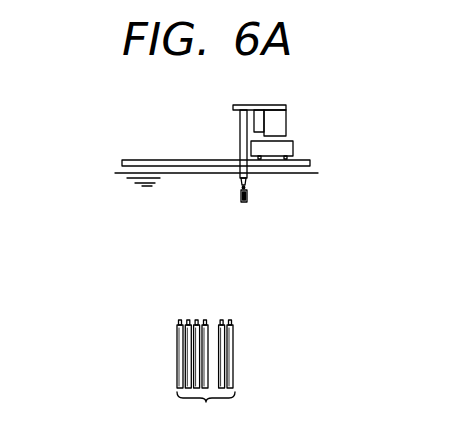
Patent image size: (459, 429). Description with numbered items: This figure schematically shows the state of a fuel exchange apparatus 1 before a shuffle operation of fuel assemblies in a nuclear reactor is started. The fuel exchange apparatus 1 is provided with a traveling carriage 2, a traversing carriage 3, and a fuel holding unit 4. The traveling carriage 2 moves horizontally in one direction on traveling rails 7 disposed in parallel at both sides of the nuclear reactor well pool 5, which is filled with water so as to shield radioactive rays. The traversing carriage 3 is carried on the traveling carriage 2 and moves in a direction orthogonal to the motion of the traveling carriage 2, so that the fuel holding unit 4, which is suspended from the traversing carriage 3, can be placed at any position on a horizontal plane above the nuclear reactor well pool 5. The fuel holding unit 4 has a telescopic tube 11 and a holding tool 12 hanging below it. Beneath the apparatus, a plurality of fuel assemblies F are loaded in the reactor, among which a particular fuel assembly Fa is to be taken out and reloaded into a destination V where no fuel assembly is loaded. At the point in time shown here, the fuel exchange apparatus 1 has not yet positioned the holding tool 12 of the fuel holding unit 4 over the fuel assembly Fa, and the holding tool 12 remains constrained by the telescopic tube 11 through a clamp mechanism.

The fuel exchange apparatus 1 is at (177, 117).
The traveling carriage 2 is at (273, 150).
The traversing carriage 3 is at (276, 118).
The fuel holding unit 4 is at (225, 150).
The nuclear reactor well pool 5 is at (311, 173).
The traveling rail 7 is at (151, 160).
The telescopic tube 11 is at (241, 127).
The holding tool 12 is at (239, 193).
The destination V is at (215, 325).
The fuel assembly Fa is at (190, 339).
The fuel assemblies F is at (206, 408).